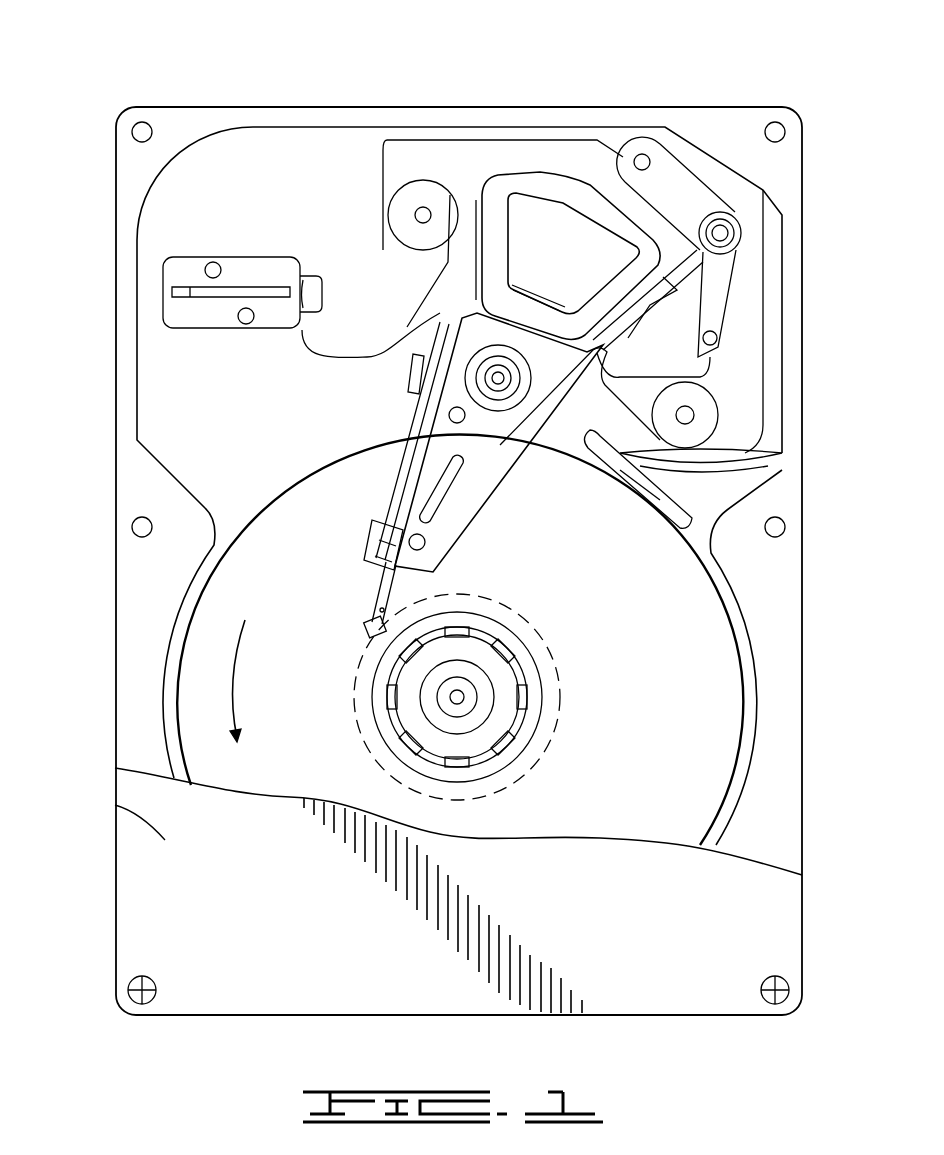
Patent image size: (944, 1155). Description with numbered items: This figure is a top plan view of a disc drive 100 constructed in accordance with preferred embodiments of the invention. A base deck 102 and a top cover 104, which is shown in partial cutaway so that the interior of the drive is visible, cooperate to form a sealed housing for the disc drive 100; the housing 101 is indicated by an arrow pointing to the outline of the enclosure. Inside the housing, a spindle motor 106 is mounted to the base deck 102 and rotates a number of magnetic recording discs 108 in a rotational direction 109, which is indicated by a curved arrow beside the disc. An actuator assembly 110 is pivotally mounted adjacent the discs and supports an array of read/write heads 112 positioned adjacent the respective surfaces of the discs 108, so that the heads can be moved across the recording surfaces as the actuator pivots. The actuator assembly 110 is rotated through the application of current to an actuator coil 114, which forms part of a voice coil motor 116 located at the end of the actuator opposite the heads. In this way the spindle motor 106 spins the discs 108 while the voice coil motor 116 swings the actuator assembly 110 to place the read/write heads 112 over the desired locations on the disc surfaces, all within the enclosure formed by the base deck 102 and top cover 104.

The disc drive 100 is at (215, 72).
The housing 101 is at (150, 170).
The base deck 102 is at (165, 397).
The top cover 104 is at (162, 838).
The spindle motor 106 is at (490, 688).
The magnetic recording discs 108 is at (713, 710).
The rotational direction 109 is at (235, 683).
The actuator assembly 110 is at (470, 450).
The read/write heads 112 is at (370, 626).
The actuator coil 114 is at (528, 178).
The voice coil motor (VCM) 116 is at (582, 156).